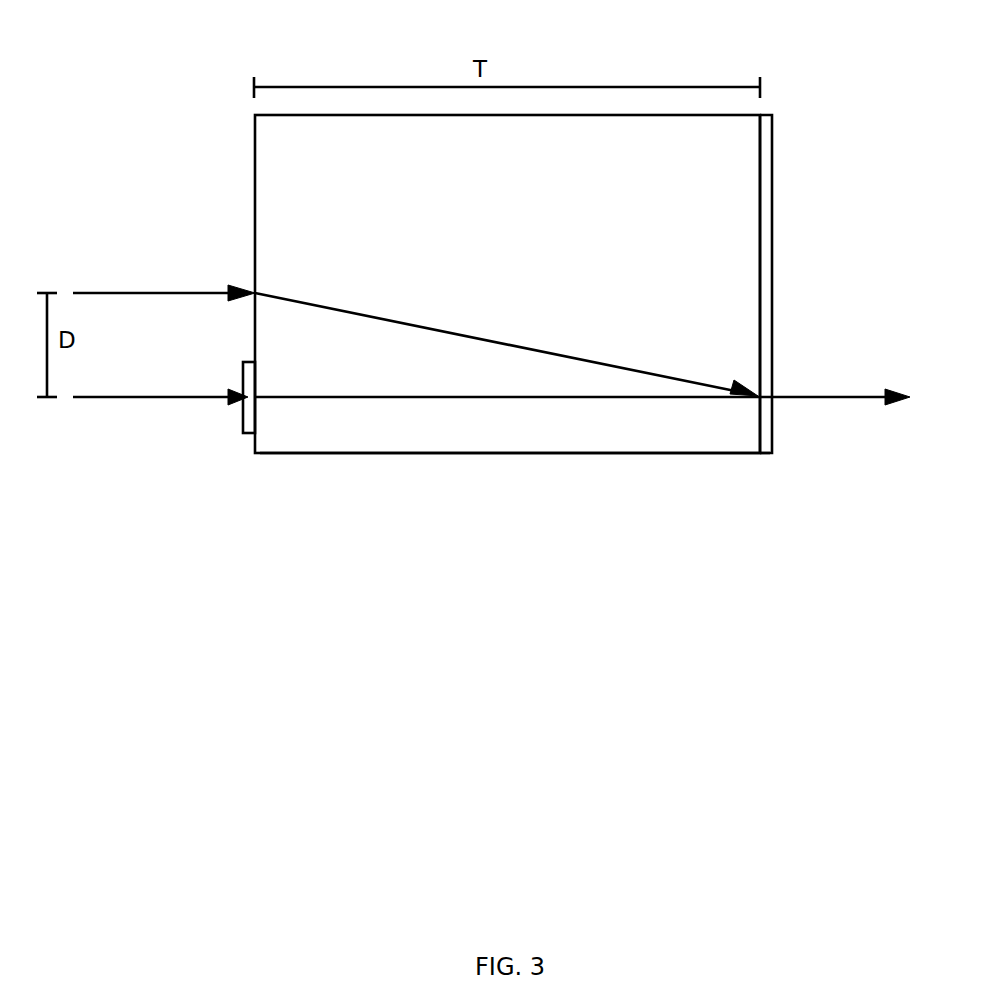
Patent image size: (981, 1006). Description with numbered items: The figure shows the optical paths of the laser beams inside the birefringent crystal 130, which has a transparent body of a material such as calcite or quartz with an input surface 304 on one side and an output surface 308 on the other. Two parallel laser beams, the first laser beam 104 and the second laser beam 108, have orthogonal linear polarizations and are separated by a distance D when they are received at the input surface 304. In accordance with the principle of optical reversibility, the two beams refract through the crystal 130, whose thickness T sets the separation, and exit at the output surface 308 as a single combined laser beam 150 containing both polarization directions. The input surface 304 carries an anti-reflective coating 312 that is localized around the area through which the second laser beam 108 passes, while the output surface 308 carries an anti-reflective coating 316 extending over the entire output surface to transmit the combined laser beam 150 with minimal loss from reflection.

The input surface 304 is at (255, 133).
The output surface 308 is at (758, 143).
The anti-reflective coating 316 is at (772, 172).
The first laser beam 104 is at (130, 293).
The second laser beam 108 is at (102, 397).
The combined laser beam 150 is at (827, 397).
The anti-reflective coating 312 is at (242, 420).
The crystal 130 is at (527, 478).